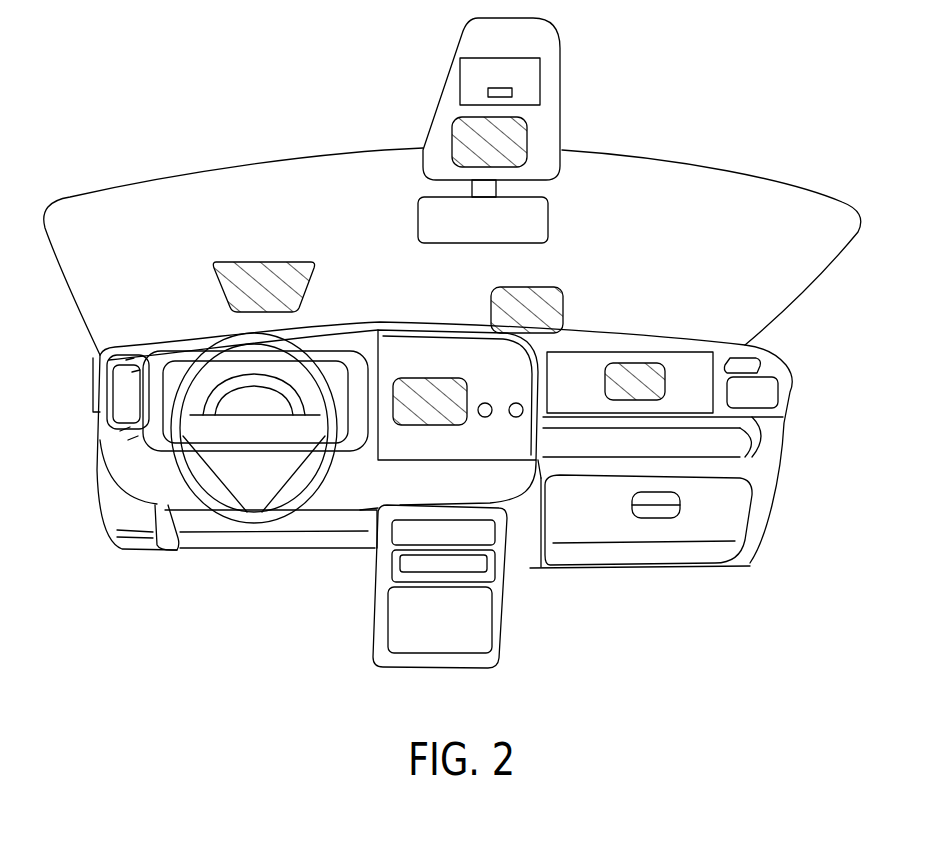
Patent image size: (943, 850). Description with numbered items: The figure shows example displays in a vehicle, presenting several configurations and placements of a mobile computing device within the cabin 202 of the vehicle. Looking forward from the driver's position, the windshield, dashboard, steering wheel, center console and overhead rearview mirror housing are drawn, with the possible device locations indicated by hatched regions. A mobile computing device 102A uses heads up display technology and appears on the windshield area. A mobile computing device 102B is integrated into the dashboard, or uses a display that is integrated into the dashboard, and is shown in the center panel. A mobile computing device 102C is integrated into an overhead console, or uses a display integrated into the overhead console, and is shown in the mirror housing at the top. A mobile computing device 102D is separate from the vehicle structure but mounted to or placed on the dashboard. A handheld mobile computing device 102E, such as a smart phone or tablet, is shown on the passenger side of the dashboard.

The cabin 202 is at (709, 84).
The mobile computing device 102A is at (263, 259).
The mobile computing device 102B is at (420, 377).
The mobile computing device 102C is at (452, 143).
The mobile computing device 102D is at (558, 287).
The handheld mobile computing device 102E is at (643, 365).